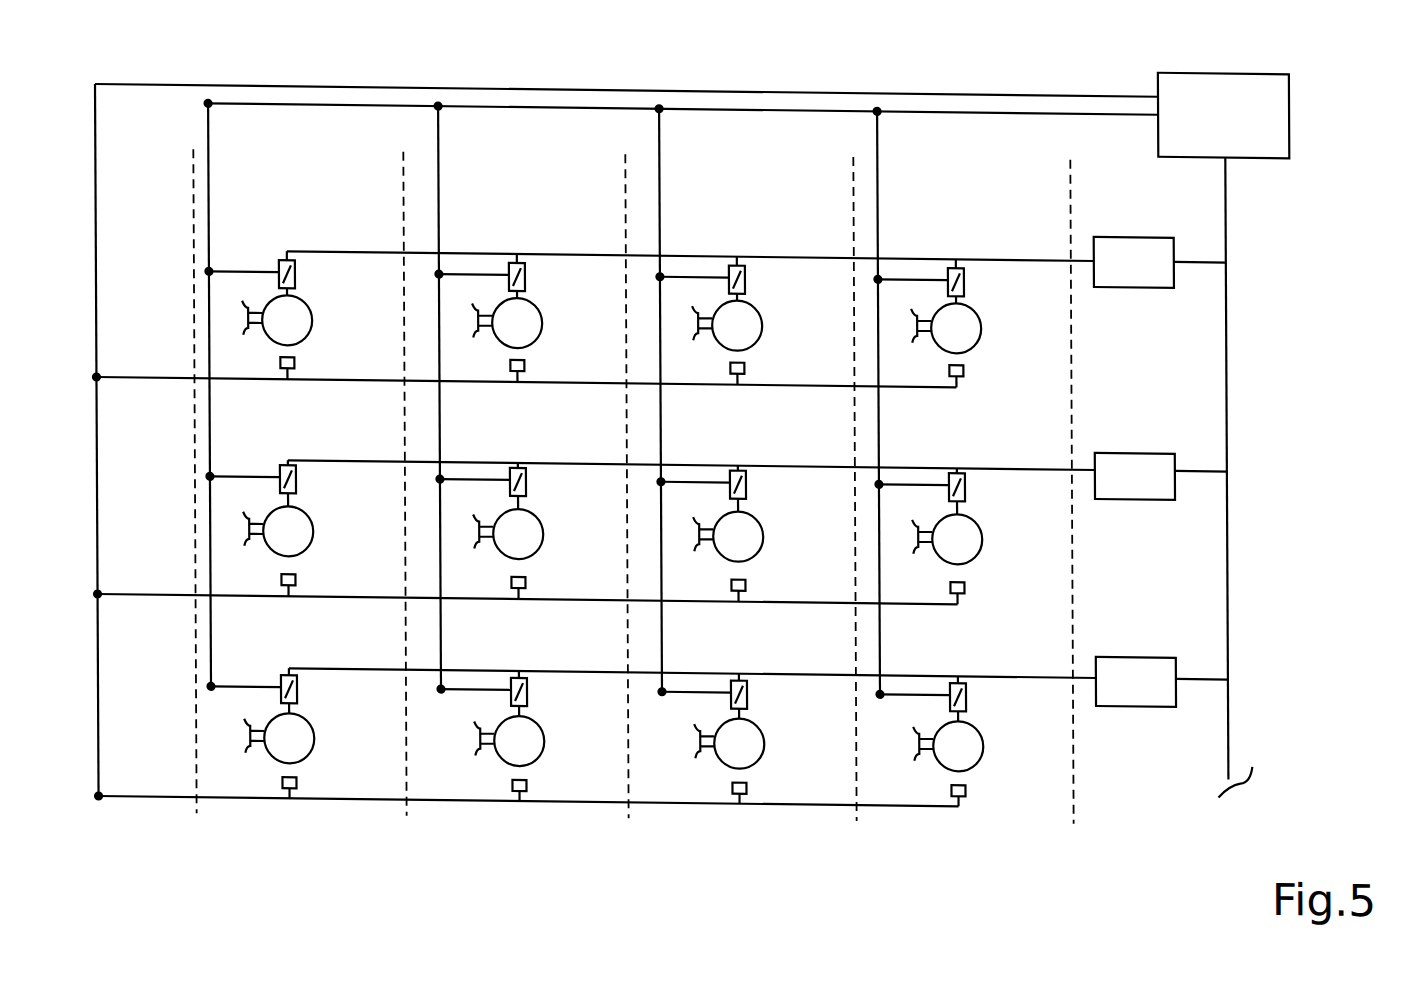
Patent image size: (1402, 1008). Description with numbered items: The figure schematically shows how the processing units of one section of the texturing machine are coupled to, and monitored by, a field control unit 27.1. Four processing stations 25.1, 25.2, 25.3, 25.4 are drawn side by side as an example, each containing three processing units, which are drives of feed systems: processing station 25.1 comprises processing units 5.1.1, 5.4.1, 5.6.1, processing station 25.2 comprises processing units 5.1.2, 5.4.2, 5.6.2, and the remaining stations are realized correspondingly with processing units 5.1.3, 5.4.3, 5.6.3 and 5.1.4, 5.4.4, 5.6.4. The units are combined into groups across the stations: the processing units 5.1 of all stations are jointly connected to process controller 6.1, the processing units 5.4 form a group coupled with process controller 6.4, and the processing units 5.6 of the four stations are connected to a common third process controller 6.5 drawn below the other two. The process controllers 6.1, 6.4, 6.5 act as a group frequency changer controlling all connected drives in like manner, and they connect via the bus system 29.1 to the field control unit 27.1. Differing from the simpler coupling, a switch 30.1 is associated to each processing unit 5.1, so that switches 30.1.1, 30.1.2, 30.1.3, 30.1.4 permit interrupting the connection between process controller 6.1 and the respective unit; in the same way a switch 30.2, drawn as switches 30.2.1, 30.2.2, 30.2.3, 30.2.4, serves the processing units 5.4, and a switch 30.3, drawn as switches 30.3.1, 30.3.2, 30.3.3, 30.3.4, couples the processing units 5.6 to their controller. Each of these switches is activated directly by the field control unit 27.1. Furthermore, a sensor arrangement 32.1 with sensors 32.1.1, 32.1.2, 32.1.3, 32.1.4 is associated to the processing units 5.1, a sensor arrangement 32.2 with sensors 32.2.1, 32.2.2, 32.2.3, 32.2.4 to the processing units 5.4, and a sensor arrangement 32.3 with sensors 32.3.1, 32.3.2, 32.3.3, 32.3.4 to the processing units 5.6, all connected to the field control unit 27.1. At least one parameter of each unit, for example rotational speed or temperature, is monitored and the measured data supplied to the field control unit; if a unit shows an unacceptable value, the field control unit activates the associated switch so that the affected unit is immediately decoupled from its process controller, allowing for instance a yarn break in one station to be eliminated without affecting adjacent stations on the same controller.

The field control unit 27.1 is at (1252, 124).
The bus system 29.1 is at (1226, 351).
The process controller 6.1 is at (1160, 263).
The process controller 6.4 is at (1161, 477).
The switching unit 6.5 is at (1162, 682).
The processing station 25.1 is at (332, 860).
The processing station 25.2 is at (573, 860).
The processing station 25.3 is at (783, 860).
The processing station 25.4 is at (1010, 860).
The switch 30.1 is at (278, 268).
The switch 30.2 is at (278, 472).
The switch 30.3 is at (278, 680).
The processing unit 5.1 is at (265, 304).
The processing unit 5.4 is at (265, 515).
The processing unit 5.6 is at (265, 721).
The sensor arrangement 32.1 is at (280, 360).
The sensor arrangement 32.2 is at (280, 574).
The sensor arrangement 32.3 is at (281, 774).
The switch 30.1.1 is at (295, 272).
The switch 30.1.2 is at (525, 272).
The switch 30.1.3 is at (745, 272).
The switch 30.1.4 is at (964, 272).
The switch 30.2.1 is at (295, 477).
The switch 30.2.2 is at (525, 477).
The switch 30.2.3 is at (745, 477).
The switch 30.2.4 is at (964, 477).
The switch 30.3.1 is at (295, 687).
The switch 30.3.2 is at (525, 687).
The switch 30.3.3 is at (745, 687).
The switch 30.3.4 is at (964, 687).
The processing unit 5.1.1 is at (312, 321).
The processing unit 5.1.2 is at (542, 324).
The processing unit 5.1.3 is at (762, 326).
The processing unit 5.1.4 is at (981, 329).
The processing unit 5.4.1 is at (313, 532).
The processing unit 5.4.2 is at (543, 535).
The processing unit 5.4.3 is at (763, 537).
The processing unit 5.4.4 is at (982, 540).
The processing unit 5.6.1 is at (314, 739).
The processing unit 5.6.2 is at (544, 742).
The processing unit 5.6.3 is at (764, 744).
The processing unit 5.6.4 is at (983, 747).
The sensor arrangement 32.1.1 is at (294, 360).
The sensor arrangement 32.1.2 is at (524, 360).
The sensor arrangement 32.1.3 is at (744, 360).
The sensor arrangement 32.1.4 is at (963, 360).
The sensor arrangement 32.2.1 is at (294, 577).
The sensor arrangement 32.2.2 is at (524, 577).
The sensor arrangement 32.2.3 is at (744, 577).
The sensor arrangement 32.2.4 is at (963, 577).
The sensor 32.3.1 is at (294, 780).
The sensor 32.3.2 is at (524, 780).
The sensor 32.3.3 is at (744, 780).
The sensor 32.3.4 is at (963, 780).